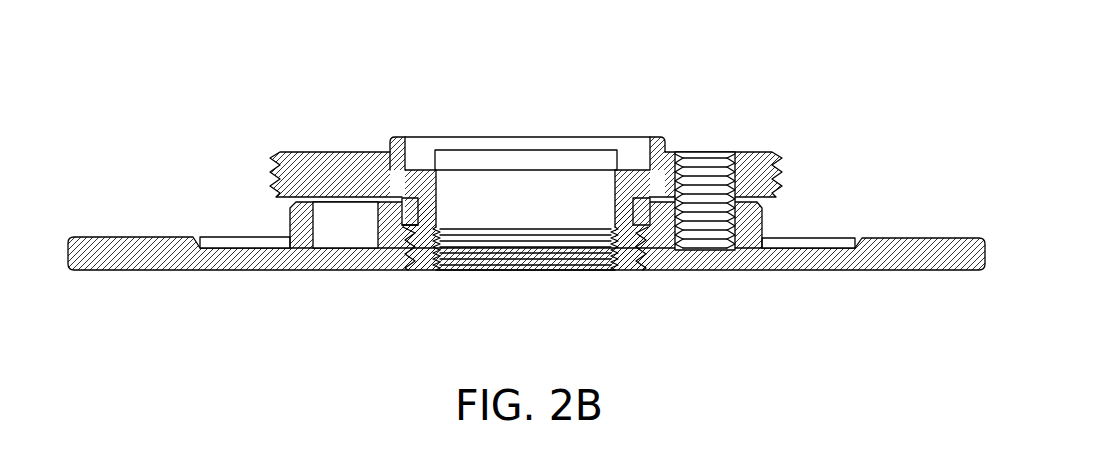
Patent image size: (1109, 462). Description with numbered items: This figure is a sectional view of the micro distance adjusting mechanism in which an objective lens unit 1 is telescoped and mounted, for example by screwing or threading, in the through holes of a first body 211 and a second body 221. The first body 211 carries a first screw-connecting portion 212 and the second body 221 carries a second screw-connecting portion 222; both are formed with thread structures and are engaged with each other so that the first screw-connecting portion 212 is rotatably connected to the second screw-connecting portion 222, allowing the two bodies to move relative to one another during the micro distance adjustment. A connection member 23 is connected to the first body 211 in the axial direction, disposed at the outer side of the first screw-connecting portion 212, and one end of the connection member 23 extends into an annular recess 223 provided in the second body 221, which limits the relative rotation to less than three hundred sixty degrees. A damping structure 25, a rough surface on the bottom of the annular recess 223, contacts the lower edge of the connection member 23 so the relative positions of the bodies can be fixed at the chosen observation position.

The objective lens unit 1 is at (541, 185).
The connection member 23 is at (703, 162).
The first body 211 is at (272, 176).
The annular recess 223 is at (333, 220).
The second body 221 is at (904, 254).
The damping structure 25 is at (346, 252).
The first screw-connecting portion 212 is at (632, 272).
The second screw-connecting portion 222 is at (650, 252).